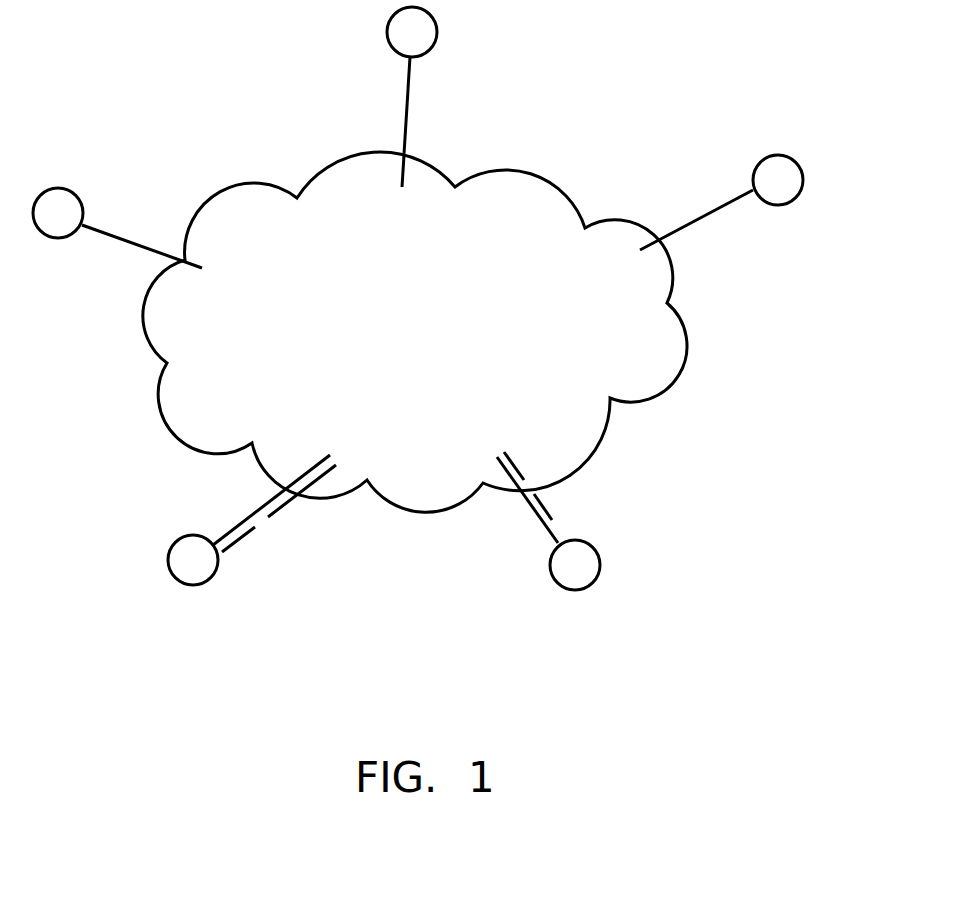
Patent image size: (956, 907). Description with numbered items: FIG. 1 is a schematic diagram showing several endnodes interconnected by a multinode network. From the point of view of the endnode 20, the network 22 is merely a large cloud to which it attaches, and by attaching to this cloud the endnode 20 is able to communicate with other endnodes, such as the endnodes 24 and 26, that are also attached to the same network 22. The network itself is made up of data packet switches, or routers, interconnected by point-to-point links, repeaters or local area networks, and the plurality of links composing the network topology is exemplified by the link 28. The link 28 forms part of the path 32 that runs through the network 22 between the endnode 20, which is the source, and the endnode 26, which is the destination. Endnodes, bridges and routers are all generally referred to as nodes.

The endnode 20 is at (220, 560).
The network 22 is at (490, 374).
The endnode 24 is at (798, 162).
The endnode 26 is at (257, 505).
The link 28 is at (547, 515).
The path 32 is at (253, 522).